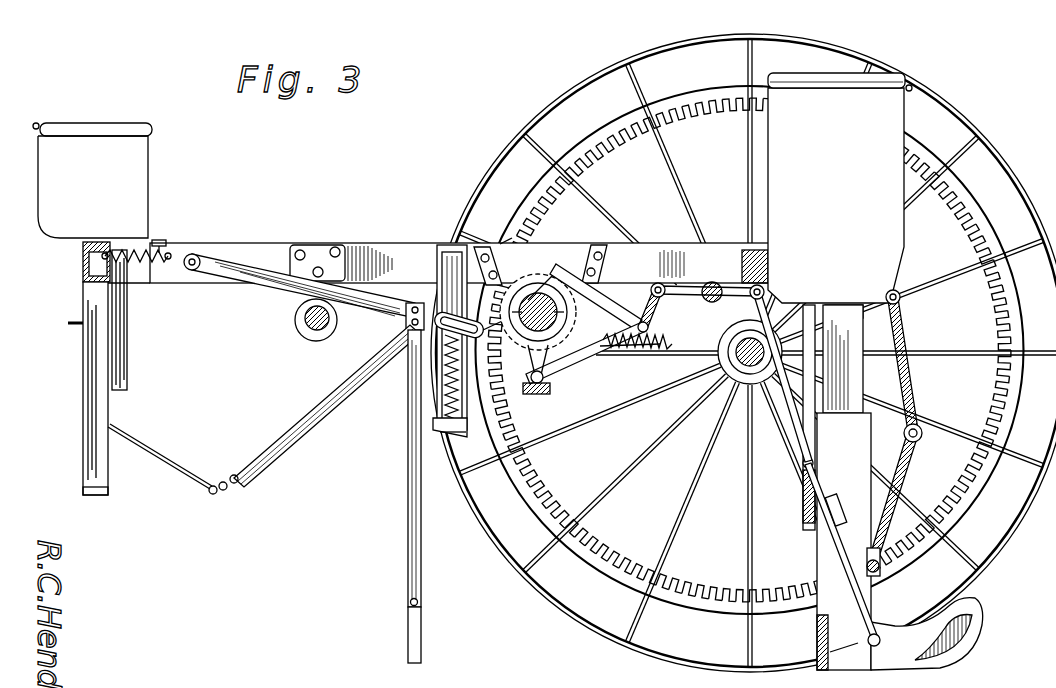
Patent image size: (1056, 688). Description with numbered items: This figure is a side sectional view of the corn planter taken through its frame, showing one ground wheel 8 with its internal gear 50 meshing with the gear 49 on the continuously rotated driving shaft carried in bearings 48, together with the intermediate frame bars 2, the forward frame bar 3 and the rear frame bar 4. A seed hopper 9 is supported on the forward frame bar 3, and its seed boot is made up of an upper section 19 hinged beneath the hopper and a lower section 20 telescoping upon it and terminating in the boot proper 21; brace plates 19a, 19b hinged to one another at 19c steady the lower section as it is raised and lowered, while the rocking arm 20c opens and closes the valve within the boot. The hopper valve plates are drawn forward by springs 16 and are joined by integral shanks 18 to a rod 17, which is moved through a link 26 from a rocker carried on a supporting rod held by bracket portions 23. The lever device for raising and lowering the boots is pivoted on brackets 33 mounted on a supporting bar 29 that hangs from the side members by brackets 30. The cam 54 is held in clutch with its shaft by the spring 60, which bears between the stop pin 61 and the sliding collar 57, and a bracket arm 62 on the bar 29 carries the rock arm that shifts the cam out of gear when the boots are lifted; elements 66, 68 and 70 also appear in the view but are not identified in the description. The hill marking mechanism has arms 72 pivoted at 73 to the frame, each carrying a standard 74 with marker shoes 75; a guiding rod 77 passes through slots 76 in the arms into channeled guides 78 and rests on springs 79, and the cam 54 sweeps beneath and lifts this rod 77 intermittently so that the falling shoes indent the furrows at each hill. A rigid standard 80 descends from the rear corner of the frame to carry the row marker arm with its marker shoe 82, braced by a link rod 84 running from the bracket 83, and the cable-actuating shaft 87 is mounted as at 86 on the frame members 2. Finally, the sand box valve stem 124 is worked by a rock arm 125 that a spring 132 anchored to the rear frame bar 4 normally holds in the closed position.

The intermediate frame bars 2 is at (415, 252).
The forward frame bar 3 is at (770, 263).
The rear frame bar 4 is at (83, 270).
The ground wheel 8 is at (1055, 250).
The seed hopper 9 is at (840, 195).
The spring 16 is at (752, 288).
The rod 17 is at (703, 286).
The integral shank 18 is at (655, 350).
The seed boot section 19 is at (900, 385).
The brace plate 19a is at (911, 291).
The brace plate 19b is at (875, 472).
The hinge connection 19c is at (911, 415).
The lower seed boot section 20 is at (895, 432).
The actuating rocking arm 20c is at (844, 541).
The seed boot 21 is at (930, 625).
The bracket portion 23 is at (652, 312).
The link 26 is at (704, 288).
The supporting bar 29 is at (551, 409).
The bracket 30 is at (528, 395).
The bracket 33 is at (803, 467).
The bearing 48 is at (546, 272).
The gear 49 is at (585, 265).
The internal gear 50 is at (1022, 420).
The cam 54 is at (550, 382).
The collar 57 is at (436, 328).
The spring 60 is at (590, 278).
The stop shoulder or pin 61 is at (592, 300).
The bracket arm 62 is at (596, 350).
The pawl 66 is at (512, 238).
The hub 68 is at (670, 385).
The arm 70 is at (660, 346).
The hill marking arm 72 is at (275, 288).
The pivot 73 is at (200, 258).
The standard 74 is at (407, 497).
The marker shoe 75 is at (437, 635).
The slot 76 is at (438, 298).
The guiding rod 77 is at (405, 315).
The channeled guide 78 is at (436, 423).
The spring 79 is at (465, 437).
The rigid standard 80 is at (85, 385).
The marker shoe 82 is at (72, 324).
The bracket 83 is at (335, 403).
The link rod 84 is at (178, 448).
The mounting 86 is at (330, 250).
The shaft 87 is at (310, 340).
The shank or stem 124 is at (163, 242).
The rock arm 125 is at (170, 262).
The spring 132 is at (136, 272).